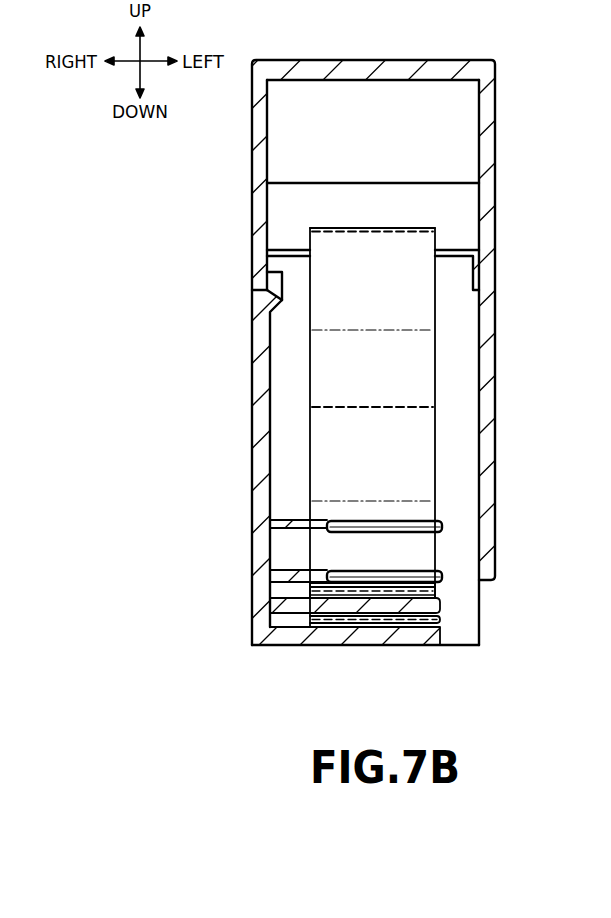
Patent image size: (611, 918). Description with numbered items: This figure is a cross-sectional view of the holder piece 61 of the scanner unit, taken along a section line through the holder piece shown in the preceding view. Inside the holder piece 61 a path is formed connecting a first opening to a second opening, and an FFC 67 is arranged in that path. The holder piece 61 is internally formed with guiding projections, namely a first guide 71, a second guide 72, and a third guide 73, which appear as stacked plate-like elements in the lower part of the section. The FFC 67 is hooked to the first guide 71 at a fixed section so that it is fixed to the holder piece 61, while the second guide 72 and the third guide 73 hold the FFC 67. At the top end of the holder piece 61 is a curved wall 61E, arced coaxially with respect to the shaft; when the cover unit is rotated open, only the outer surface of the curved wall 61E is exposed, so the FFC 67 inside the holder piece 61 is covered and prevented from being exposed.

The holder piece 61 is at (529, 175).
The curved wall 61E is at (302, 149).
The FFC 67 is at (371, 227).
The first guide 71 is at (440, 606).
The second guide 72 is at (442, 576).
The third guide 73 is at (442, 526).